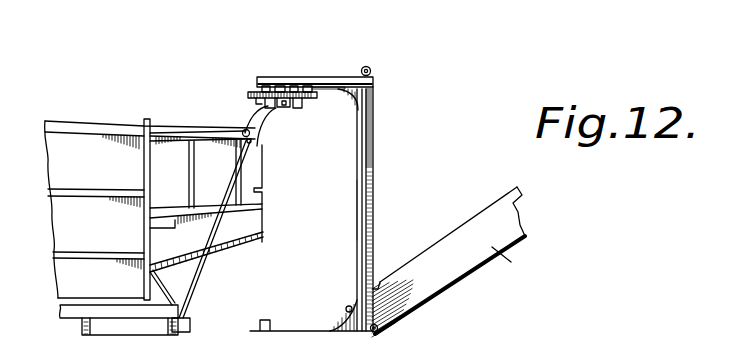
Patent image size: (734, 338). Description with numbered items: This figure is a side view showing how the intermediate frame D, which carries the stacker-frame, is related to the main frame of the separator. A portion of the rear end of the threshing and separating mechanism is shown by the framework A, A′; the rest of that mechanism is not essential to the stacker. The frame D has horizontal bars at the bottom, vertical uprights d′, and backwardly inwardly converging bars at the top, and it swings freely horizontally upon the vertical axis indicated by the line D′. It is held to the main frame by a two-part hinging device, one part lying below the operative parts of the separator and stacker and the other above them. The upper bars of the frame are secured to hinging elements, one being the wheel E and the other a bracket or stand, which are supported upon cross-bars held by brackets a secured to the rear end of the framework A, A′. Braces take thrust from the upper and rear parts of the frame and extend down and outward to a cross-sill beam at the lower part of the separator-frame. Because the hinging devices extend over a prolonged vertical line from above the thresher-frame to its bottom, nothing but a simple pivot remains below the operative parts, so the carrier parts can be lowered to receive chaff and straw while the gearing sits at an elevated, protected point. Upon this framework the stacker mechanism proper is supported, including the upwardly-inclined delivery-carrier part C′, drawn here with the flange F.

The framework of the separator A is at (150, 219).
The framework of the separator A′ is at (164, 201).
The brackets a is at (275, 112).
The wheel E is at (252, 92).
The rotary frame D is at (311, 209).
The vertical axis line D′ is at (288, 76).
The vertical uprights d′ is at (374, 210).
The upwardly-inclined part of the delivery-carrier C′ is at (448, 262).
The flange of chute F is at (508, 261).